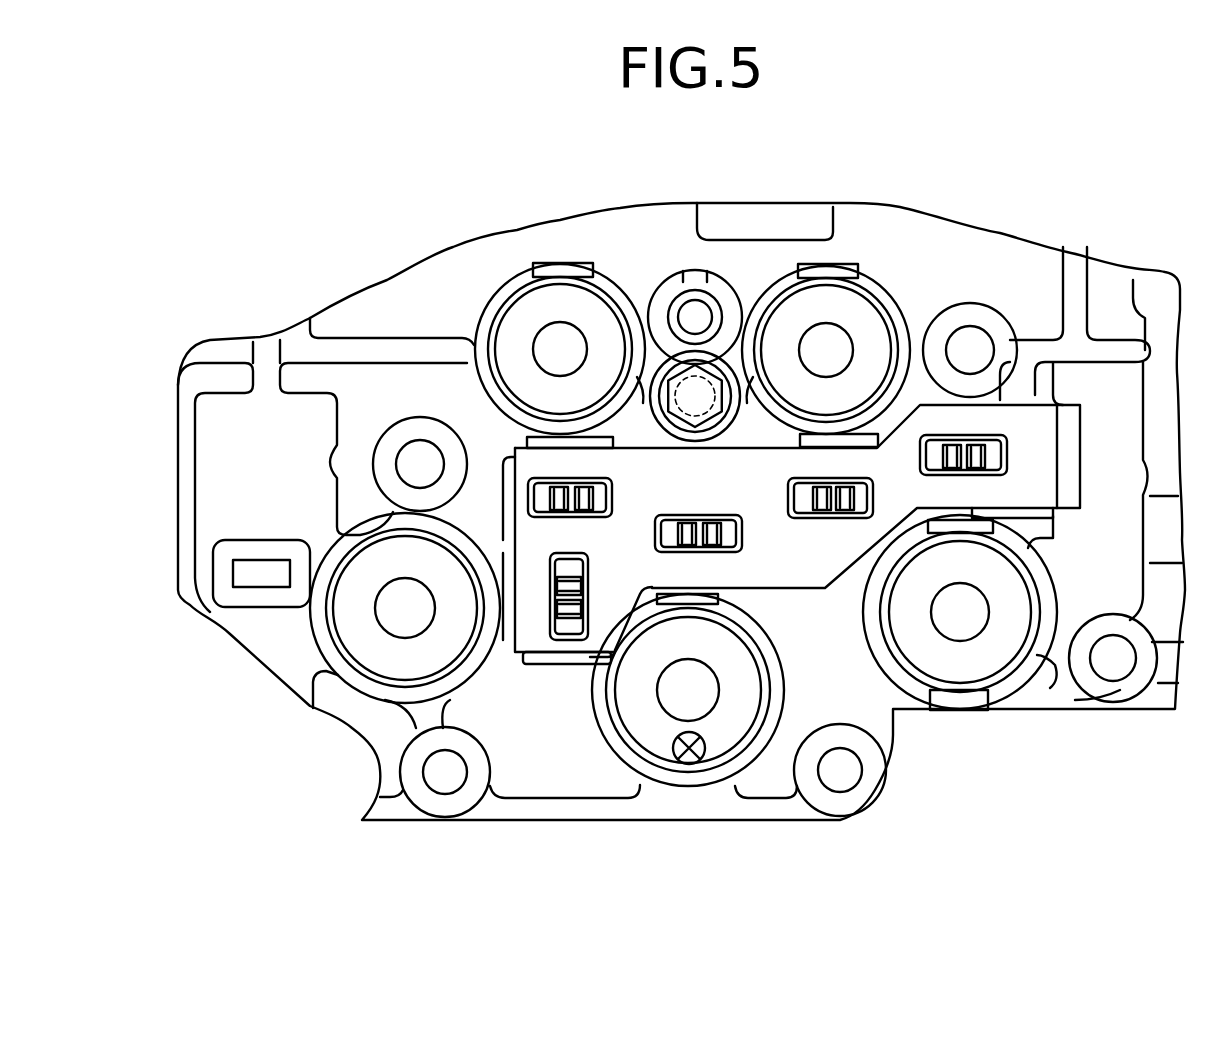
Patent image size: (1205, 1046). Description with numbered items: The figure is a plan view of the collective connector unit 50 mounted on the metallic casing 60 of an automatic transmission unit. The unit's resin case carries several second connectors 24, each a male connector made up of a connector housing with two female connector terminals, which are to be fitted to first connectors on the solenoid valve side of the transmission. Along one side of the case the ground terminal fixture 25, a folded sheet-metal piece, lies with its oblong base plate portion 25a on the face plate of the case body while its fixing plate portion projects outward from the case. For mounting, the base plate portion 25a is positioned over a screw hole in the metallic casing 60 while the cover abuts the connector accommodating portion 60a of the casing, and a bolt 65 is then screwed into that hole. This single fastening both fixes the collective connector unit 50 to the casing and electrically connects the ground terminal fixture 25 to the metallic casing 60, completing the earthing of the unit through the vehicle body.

The second connector 24 is at (690, 517).
The ground terminal fixture 25 is at (643, 382).
The base plate portion 25a is at (668, 362).
The collective connector unit 50 is at (873, 443).
The metallic casing 60 is at (660, 822).
The connector accommodating portion 60a is at (843, 587).
The bolt 65 is at (723, 355).